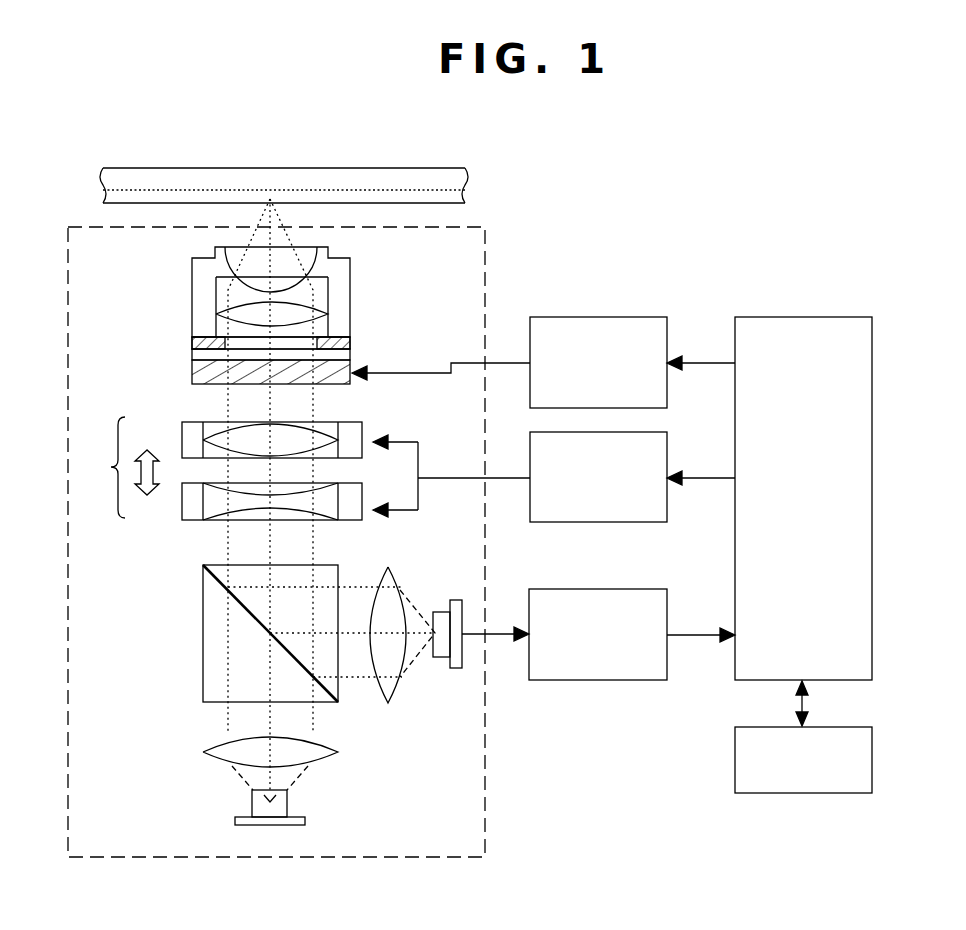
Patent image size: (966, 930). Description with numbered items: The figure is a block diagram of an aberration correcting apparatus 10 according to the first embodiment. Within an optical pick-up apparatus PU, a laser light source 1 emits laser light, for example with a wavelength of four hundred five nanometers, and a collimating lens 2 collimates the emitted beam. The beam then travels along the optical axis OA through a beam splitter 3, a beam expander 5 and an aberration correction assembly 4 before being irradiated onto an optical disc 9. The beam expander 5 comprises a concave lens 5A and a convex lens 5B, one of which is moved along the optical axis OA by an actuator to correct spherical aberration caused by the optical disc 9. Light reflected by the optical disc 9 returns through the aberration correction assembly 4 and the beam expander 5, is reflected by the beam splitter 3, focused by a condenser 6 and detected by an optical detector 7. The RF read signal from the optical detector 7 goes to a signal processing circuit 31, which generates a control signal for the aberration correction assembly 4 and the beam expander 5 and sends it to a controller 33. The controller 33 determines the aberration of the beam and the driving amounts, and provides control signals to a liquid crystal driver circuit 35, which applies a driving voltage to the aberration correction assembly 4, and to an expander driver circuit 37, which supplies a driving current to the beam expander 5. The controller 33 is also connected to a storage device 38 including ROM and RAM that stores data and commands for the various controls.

The laser light source 1 is at (235, 821).
The collimating lens 2 is at (203, 752).
The beam splitter 3 is at (203, 618).
The aberration correction assembly 4 is at (192, 308).
The beam expander 5 is at (226, 469).
The concave lens 5A is at (182, 512).
The convex lens 5B is at (182, 425).
The condenser 6 is at (393, 577).
The optical detector 7 is at (455, 668).
The optical disc 9 is at (465, 172).
The aberration correcting apparatus 10 is at (650, 237).
The signal processing circuit 31 is at (667, 600).
The controller 33 is at (872, 362).
The liquid crystal driver circuit 35 is at (667, 325).
The expander driver circuit 37 is at (667, 440).
The storage device 38 is at (872, 746).
The optical pick-up apparatus PU is at (487, 254).
The optical axis OA is at (270, 553).